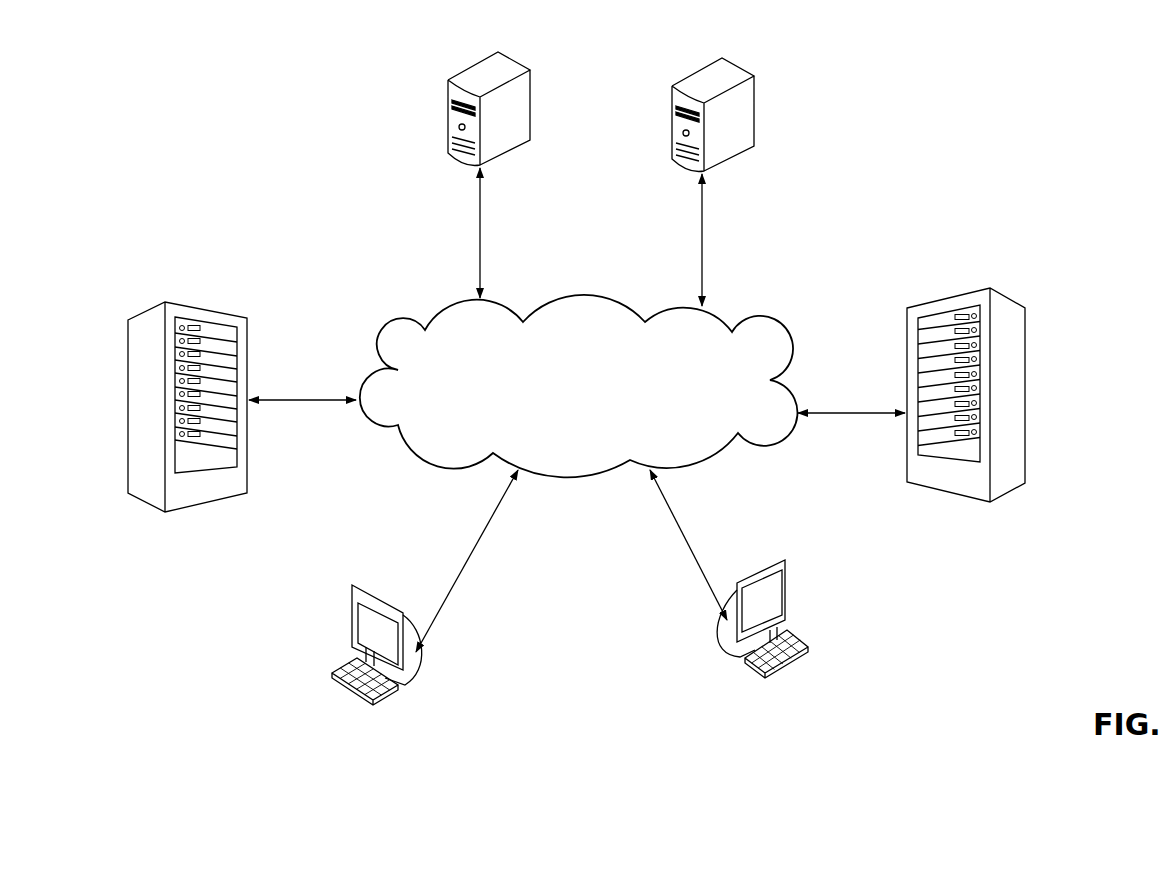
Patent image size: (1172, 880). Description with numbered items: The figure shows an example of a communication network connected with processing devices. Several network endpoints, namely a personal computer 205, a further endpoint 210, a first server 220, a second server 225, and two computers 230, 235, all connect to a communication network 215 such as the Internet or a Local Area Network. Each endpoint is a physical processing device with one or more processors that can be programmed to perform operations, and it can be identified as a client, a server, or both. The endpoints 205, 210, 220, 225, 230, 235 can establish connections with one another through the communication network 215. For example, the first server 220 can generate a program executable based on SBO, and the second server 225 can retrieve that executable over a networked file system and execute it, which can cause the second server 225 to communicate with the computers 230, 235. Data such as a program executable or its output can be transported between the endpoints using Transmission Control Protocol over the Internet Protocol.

The personal computer 205 is at (410, 686).
The network endpoint 210 is at (718, 645).
The communication network 215 is at (777, 328).
The first server 220 is at (535, 120).
The second server 225 is at (759, 128).
The computer 230 is at (165, 298).
The computer 235 is at (1027, 306).